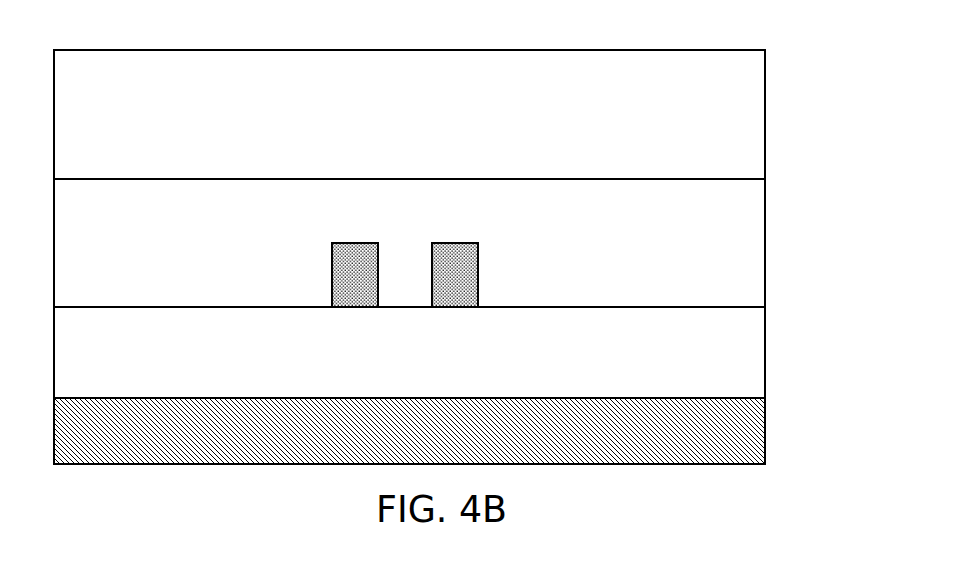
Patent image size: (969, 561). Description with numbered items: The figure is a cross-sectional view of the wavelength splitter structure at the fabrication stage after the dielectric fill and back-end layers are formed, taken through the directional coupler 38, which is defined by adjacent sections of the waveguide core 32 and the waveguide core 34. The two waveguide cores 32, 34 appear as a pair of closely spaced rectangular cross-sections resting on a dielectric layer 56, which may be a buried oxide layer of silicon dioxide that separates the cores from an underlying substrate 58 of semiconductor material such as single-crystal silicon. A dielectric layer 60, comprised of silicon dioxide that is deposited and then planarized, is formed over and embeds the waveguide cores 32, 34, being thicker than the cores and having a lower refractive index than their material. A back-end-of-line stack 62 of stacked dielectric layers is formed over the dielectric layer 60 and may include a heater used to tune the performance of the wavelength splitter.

The back-end-of-line stack 62 is at (698, 108).
The dielectric layer 60 is at (698, 211).
The dielectric layer 56 is at (718, 367).
The substrate 58 is at (718, 433).
The waveguide core 32 is at (350, 272).
The waveguide core 34 is at (460, 272).
The directional coupler 38 is at (150, 170).